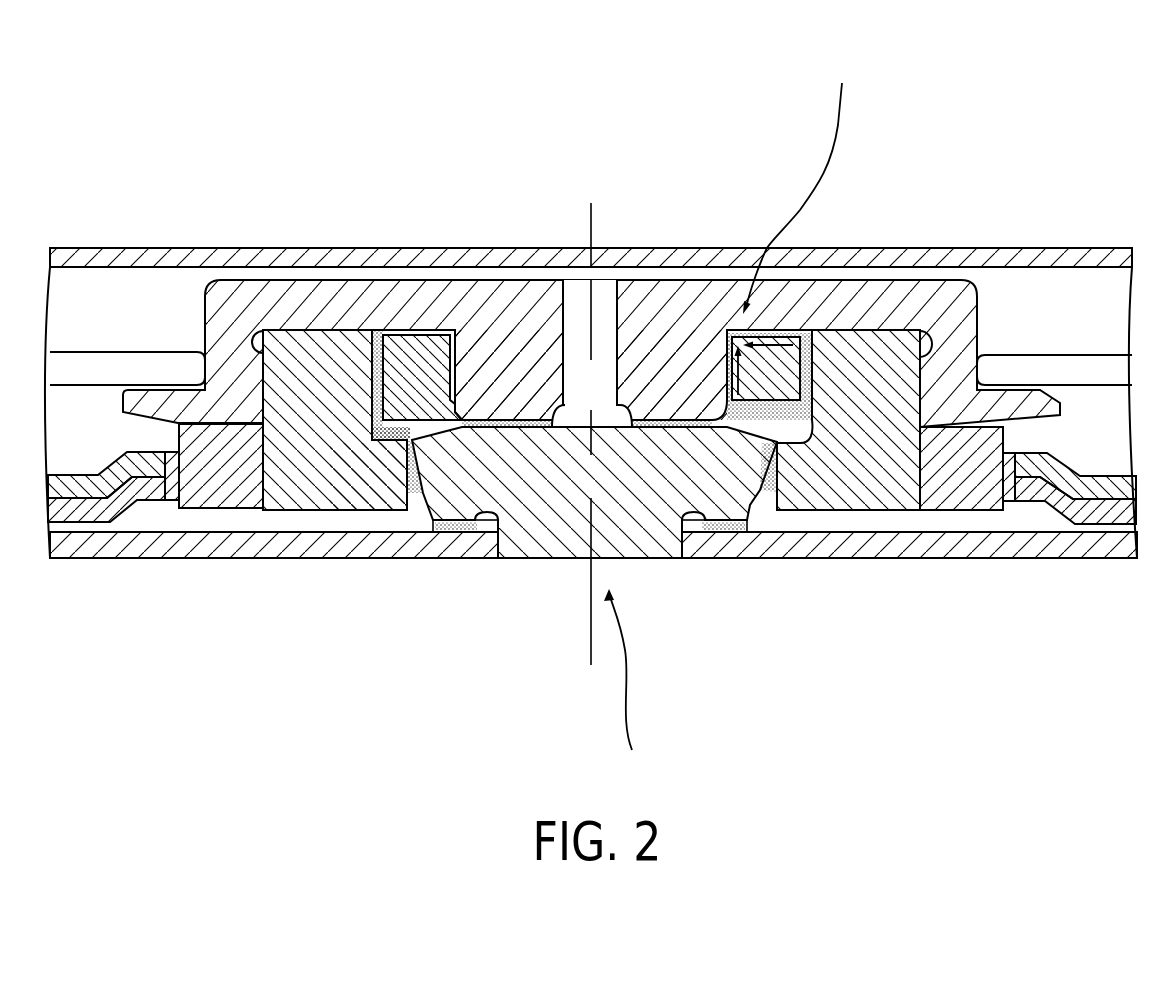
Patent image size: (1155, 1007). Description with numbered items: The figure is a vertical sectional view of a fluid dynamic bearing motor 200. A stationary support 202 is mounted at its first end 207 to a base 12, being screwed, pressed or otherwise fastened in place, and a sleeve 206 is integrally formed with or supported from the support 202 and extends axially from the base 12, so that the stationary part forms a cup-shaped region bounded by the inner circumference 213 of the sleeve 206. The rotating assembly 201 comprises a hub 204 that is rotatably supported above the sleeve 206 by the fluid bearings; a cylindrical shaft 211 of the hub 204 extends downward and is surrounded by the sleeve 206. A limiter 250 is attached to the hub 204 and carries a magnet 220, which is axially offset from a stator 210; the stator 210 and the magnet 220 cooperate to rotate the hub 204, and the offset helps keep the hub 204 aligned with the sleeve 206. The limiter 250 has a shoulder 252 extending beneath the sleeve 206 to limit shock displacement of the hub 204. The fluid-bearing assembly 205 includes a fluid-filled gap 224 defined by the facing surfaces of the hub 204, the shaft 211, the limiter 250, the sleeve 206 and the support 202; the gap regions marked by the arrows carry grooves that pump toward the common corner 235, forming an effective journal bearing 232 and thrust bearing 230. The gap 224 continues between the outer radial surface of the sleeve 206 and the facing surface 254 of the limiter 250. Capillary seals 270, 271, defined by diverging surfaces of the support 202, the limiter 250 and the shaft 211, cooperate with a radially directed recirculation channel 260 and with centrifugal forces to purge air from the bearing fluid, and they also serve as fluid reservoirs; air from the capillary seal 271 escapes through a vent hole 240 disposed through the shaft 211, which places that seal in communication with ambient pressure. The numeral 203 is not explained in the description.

The base 12 is at (858, 548).
The fluid dynamic bearing motor 200 is at (591, 393).
The rotating assembly 201 is at (512, 270).
The stationary support 202 is at (566, 520).
The flow direction 203 is at (629, 685).
The hub 204 is at (658, 297).
The fluid-bearing assembly 205 is at (775, 343).
The sleeve 206 is at (374, 340).
The first end 207 is at (658, 560).
The stator 210 is at (92, 510).
The shaft 211 is at (667, 387).
The inner circumference 213 is at (492, 335).
The magnet 220 is at (224, 504).
The fluid-filled gap 224 is at (413, 340).
The thrust bearing 230 is at (800, 330).
The journal bearing 232 is at (742, 378).
The common corner 235 is at (803, 180).
The vent hole 240 is at (606, 310).
The limiter 250 is at (307, 370).
The shoulder 252 is at (395, 447).
The facing surface 254 is at (367, 413).
The recirculation channel 260 is at (777, 413).
The capillary seal 270 is at (416, 482).
The capillary seal 271 is at (525, 422).